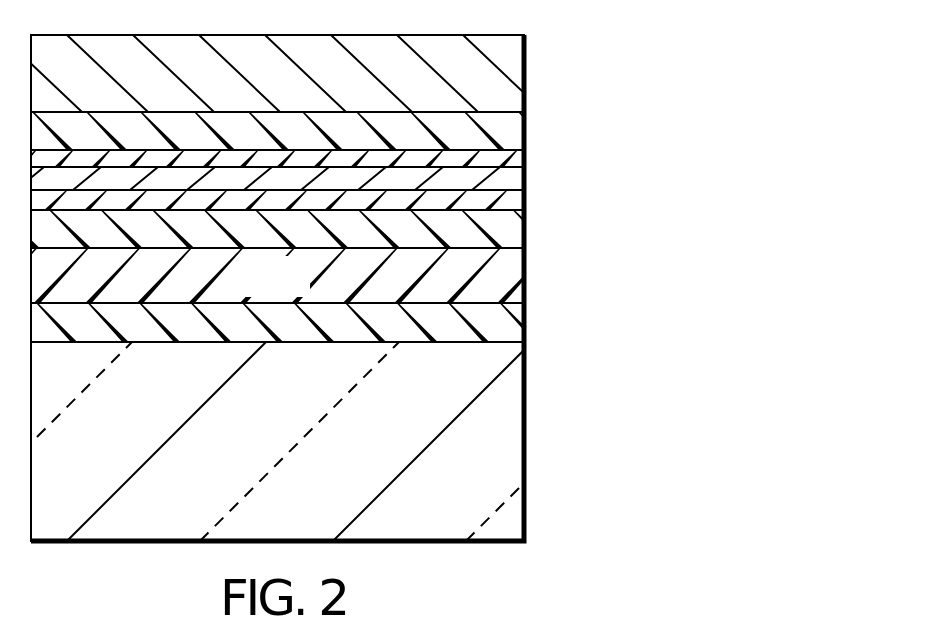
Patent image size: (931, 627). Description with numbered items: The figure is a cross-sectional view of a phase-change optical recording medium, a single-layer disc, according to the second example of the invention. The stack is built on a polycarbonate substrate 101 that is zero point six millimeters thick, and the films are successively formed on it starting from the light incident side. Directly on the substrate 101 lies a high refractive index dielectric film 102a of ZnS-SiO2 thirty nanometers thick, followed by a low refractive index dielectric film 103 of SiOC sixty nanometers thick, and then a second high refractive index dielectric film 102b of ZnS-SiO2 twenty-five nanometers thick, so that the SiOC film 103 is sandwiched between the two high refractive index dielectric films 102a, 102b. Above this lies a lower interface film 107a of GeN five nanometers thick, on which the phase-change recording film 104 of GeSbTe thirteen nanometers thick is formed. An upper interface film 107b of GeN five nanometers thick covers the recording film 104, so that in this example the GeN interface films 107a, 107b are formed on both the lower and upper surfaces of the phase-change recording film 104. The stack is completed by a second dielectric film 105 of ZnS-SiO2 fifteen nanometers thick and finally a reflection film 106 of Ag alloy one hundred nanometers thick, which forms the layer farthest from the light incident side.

The polycarbonate substrate 101 is at (510, 438).
The high refractive index dielectric film 102a is at (510, 327).
The high refractive index dielectric film 102b is at (510, 228).
The low refractive index dielectric film 103 is at (510, 282).
The phase-change recording film 104 is at (512, 178).
The second dielectric film 105 is at (503, 125).
The reflection film 106 is at (510, 67).
The lower interface film 107a is at (515, 205).
The upper interface film 107b is at (520, 153).